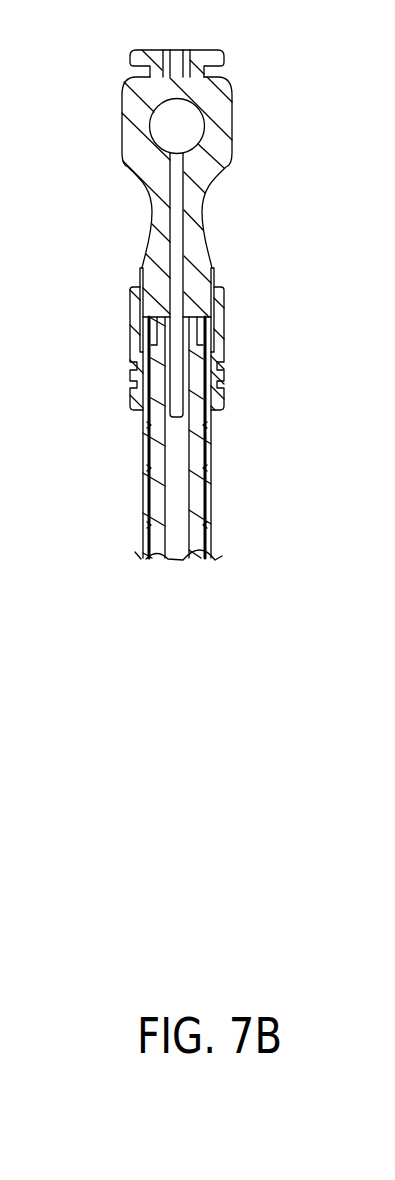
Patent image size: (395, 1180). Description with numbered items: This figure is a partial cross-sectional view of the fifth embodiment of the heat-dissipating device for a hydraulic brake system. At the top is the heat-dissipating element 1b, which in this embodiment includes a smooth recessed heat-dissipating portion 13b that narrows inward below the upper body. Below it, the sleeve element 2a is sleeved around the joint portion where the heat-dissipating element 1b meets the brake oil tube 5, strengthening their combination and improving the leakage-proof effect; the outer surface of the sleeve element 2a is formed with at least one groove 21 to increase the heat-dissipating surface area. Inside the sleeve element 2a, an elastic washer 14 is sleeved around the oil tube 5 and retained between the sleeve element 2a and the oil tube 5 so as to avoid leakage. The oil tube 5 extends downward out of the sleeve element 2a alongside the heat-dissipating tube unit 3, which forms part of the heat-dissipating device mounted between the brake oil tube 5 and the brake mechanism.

The heat-dissipating element 1b is at (244, 82).
The smooth recessed heat-dissipating portion 13b is at (202, 227).
The sleeve element 2a is at (137, 317).
The groove 21 is at (225, 303).
The elastic washer 14 is at (146, 342).
The brake oil tube 5 is at (200, 463).
The heat-dissipating tube unit 3 is at (210, 493).